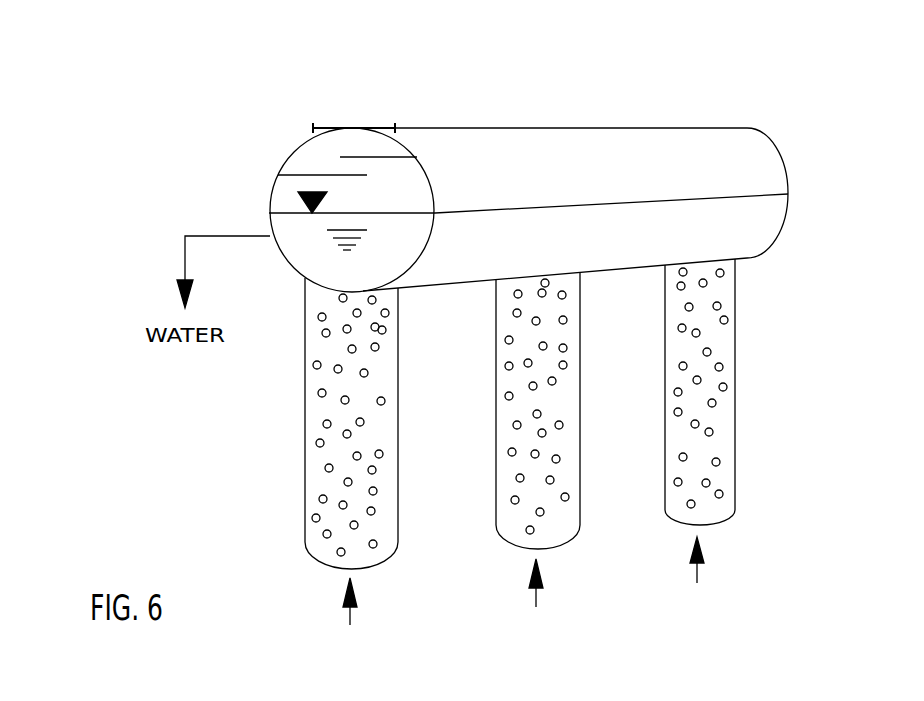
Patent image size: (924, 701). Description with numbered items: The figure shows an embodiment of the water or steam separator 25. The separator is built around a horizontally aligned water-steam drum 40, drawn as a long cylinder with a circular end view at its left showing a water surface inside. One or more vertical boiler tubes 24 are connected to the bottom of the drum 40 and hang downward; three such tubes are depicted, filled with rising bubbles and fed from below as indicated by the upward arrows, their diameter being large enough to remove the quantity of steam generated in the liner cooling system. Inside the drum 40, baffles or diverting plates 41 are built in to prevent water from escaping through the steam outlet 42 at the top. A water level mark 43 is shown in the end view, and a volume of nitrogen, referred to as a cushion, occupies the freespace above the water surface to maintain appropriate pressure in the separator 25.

The vertical boiler tubes 24 is at (373, 423).
The water or steam separator 25 is at (727, 146).
The water-steam drum 40 is at (742, 230).
The baffles or diverting plates 41 is at (377, 157).
The steam outlet 42 is at (354, 116).
The water level 43 is at (333, 199).